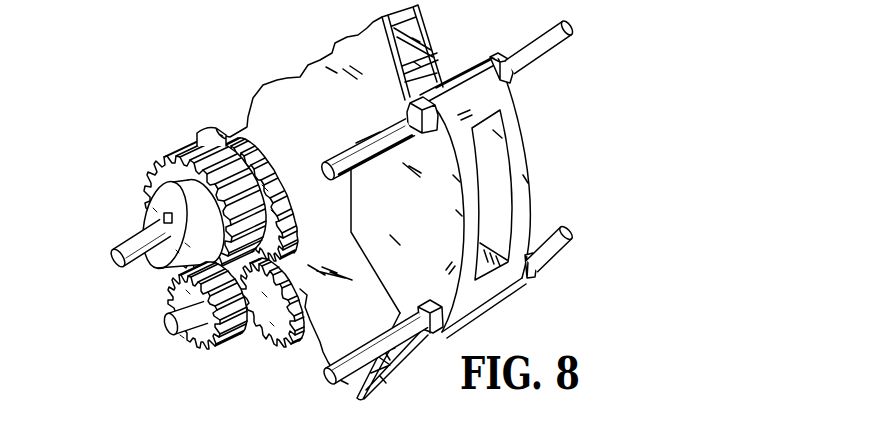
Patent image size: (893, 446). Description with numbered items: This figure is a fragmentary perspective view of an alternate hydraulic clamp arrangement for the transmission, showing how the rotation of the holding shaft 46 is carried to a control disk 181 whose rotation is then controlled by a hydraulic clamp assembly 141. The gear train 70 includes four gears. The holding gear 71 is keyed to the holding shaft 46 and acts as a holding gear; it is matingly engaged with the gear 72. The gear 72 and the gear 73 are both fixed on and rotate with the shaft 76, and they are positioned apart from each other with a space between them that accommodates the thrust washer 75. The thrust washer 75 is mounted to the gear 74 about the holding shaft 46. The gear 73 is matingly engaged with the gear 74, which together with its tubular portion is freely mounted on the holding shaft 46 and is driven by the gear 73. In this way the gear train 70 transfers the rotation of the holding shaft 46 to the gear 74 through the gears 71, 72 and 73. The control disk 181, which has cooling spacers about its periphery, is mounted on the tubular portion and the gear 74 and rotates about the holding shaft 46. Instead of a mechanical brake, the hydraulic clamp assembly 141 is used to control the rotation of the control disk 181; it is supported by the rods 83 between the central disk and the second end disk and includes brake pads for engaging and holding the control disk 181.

The control disk 181 is at (312, 86).
The hydraulic clamp assembly 141 is at (553, 169).
The rods 83 is at (547, 44).
The gear 74 is at (238, 143).
The gear 73 is at (255, 346).
The gear 72 is at (194, 350).
The holding gear 71 is at (144, 175).
The thrust washer 75 is at (205, 131).
The holding shaft 46 is at (113, 260).
The shaft 76 is at (167, 335).
The gear train 70 is at (146, 299).